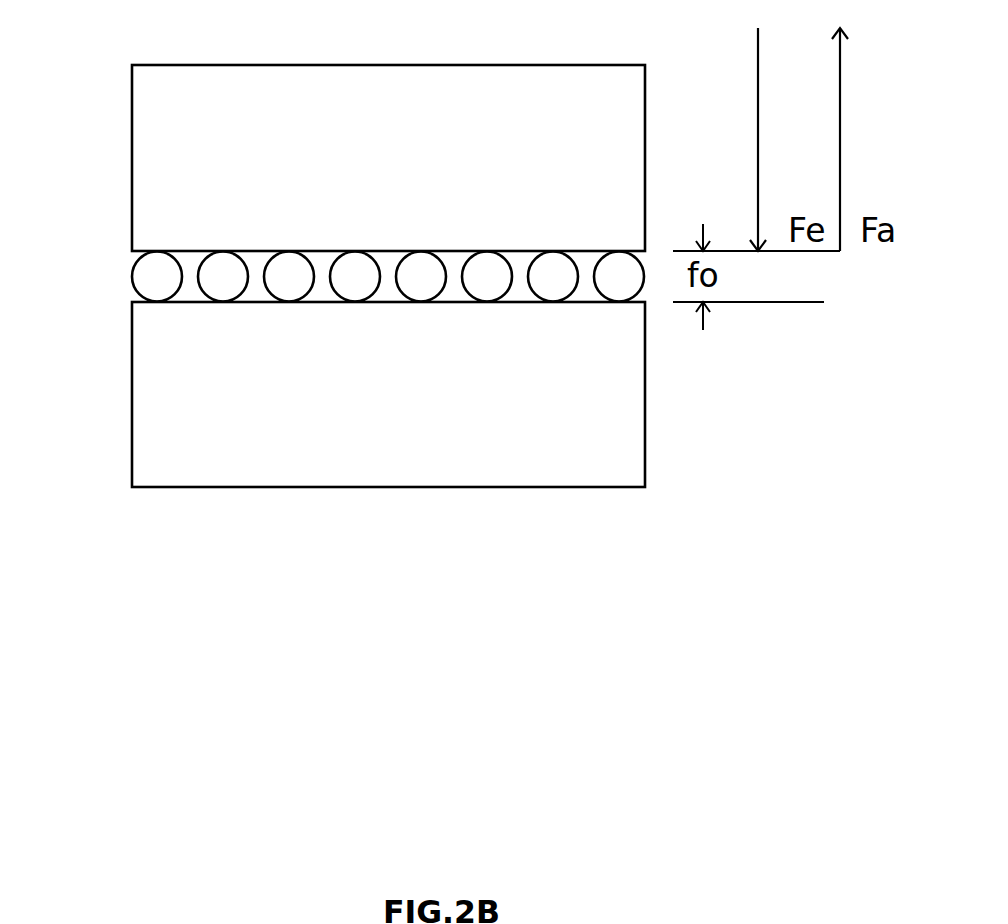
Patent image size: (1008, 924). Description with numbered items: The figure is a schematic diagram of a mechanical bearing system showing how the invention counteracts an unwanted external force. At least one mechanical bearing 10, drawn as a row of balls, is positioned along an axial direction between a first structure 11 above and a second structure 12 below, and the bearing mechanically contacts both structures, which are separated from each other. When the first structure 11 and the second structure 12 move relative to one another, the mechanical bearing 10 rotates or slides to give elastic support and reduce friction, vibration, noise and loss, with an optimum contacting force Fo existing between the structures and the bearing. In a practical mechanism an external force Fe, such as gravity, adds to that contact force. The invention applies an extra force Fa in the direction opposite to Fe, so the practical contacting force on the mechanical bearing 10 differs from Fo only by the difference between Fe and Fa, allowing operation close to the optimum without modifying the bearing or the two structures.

The mechanical bearing 10 is at (155, 273).
The first structure 11 is at (163, 114).
The second structure 12 is at (162, 452).